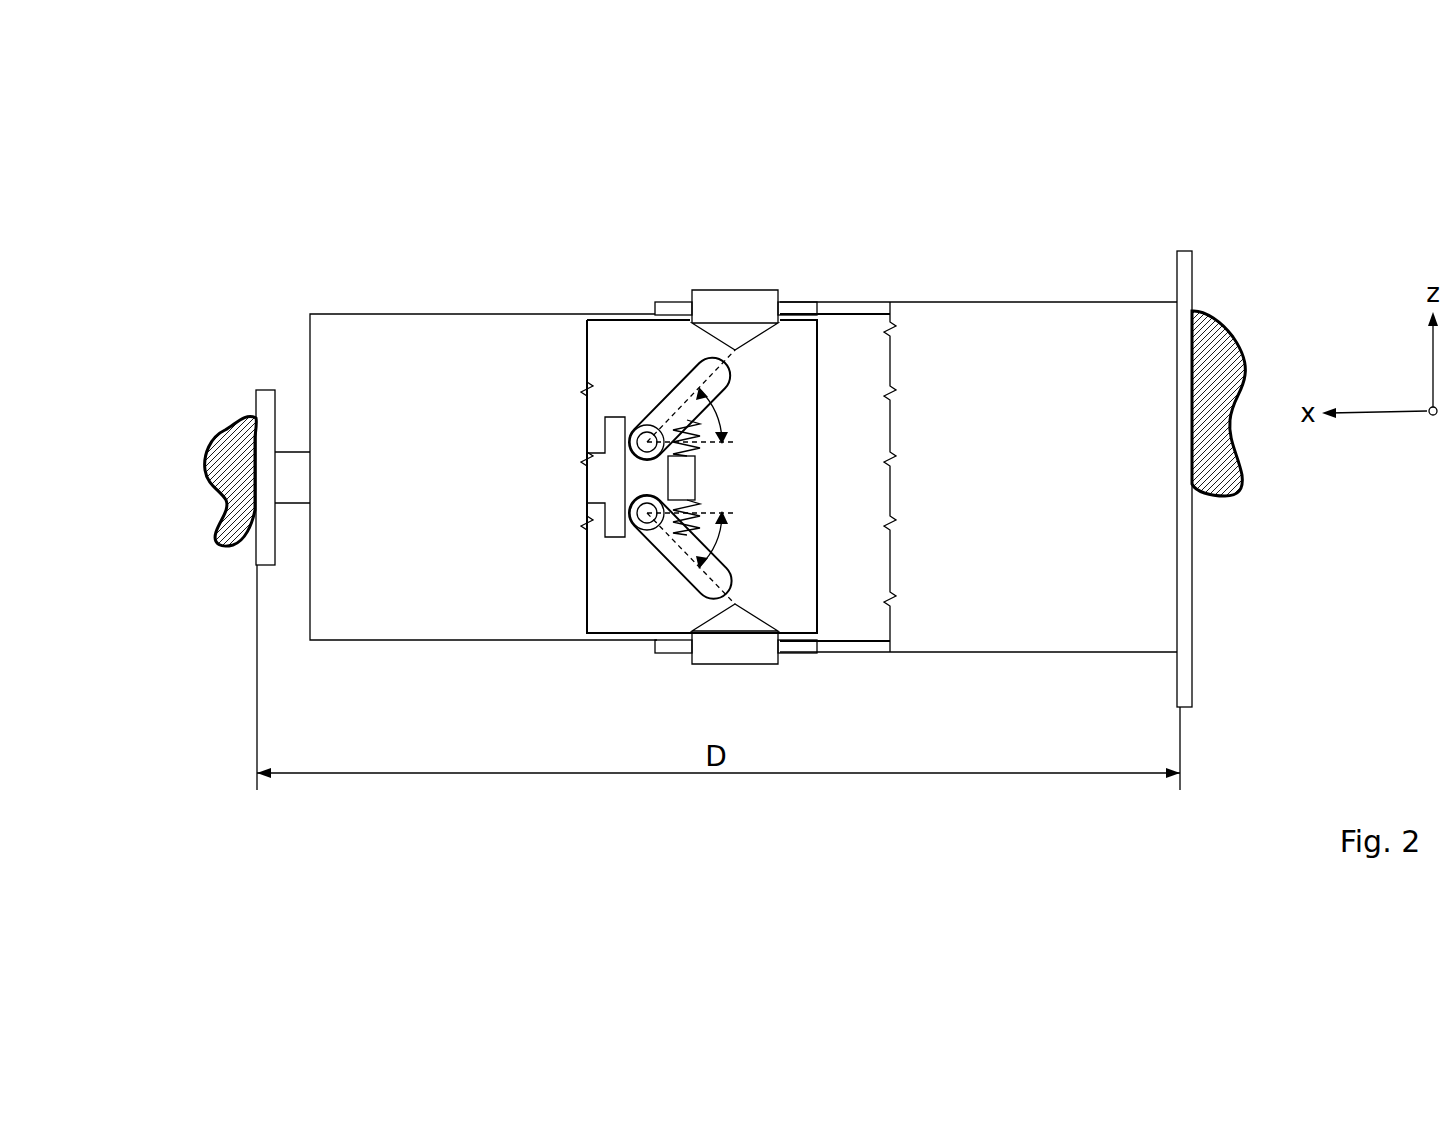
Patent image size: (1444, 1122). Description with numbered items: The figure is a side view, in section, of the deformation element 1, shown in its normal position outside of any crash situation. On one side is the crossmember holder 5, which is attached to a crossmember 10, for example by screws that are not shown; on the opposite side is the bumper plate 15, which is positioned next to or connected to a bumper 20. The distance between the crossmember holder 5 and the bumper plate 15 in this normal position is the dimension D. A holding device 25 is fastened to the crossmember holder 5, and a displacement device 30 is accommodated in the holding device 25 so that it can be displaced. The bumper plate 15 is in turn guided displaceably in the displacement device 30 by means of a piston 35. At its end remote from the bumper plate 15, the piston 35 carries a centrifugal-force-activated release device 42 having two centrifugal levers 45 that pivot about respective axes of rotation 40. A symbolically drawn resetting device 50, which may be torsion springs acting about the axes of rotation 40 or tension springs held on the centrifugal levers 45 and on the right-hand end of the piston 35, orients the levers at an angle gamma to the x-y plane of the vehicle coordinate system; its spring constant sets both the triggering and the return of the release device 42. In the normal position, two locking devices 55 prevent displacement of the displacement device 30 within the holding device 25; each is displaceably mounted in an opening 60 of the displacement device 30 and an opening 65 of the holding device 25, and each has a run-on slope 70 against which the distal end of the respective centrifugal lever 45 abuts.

The deformation element 1 is at (392, 260).
The crossmember holder 5 is at (1185, 283).
The crossmember 10 is at (1220, 372).
The bumper plate 15 is at (267, 408).
The bumper 20 is at (232, 475).
The holding device 25 is at (1100, 440).
The displacement device 30 is at (510, 335).
The piston 35 is at (291, 472).
The axes of rotation 40 is at (643, 505).
The centrifugal-force-activated release device 42 is at (589, 552).
The centrifugal levers 45 is at (672, 550).
The resetting device 50 is at (693, 533).
The locking devices 55 is at (730, 310).
The openings 60 is at (780, 302).
The openings 65 is at (782, 310).
The run-on slope 70 is at (705, 335).